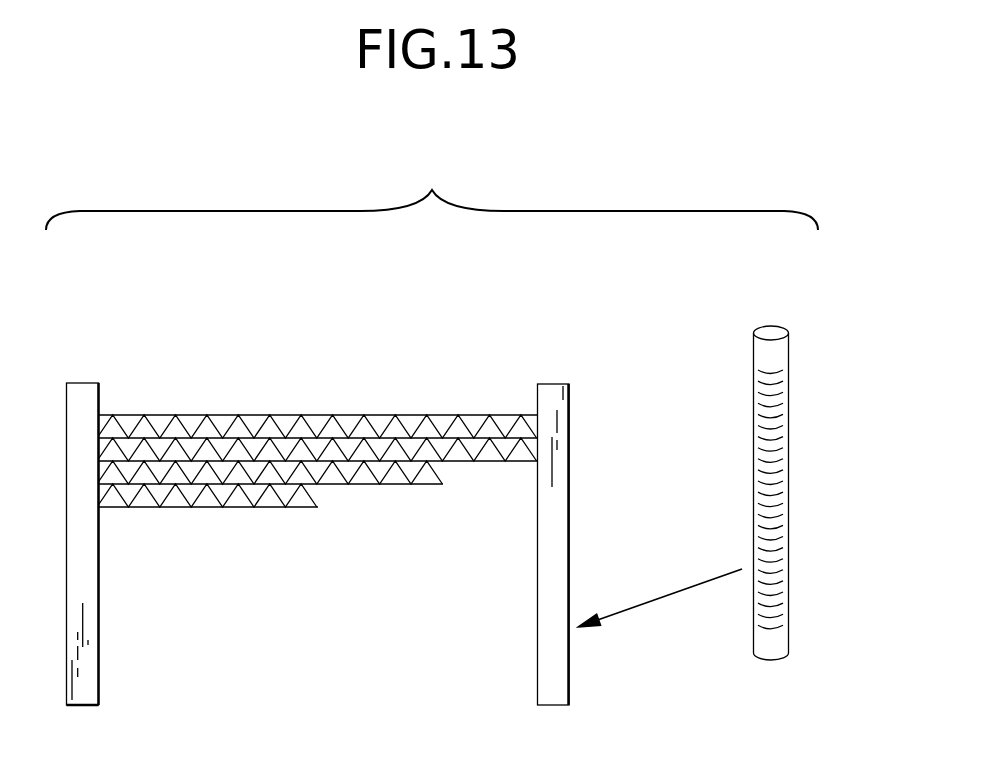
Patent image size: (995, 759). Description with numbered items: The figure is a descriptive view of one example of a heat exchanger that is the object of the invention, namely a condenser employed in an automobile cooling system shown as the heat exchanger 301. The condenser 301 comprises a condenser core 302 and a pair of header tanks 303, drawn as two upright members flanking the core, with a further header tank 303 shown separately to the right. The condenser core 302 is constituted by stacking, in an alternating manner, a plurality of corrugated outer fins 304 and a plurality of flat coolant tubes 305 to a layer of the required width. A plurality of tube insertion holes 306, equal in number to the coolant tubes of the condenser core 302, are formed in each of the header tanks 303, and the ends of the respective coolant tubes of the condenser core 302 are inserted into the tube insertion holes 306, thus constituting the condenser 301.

The heat exchanger 301 is at (473, 503).
The condenser core 302 is at (317, 421).
The header tank 303 is at (473, 513).
The corrugated outer fin 304 is at (230, 440).
The flat coolant tube 305 is at (483, 458).
The tube insertion hole 306 is at (787, 522).